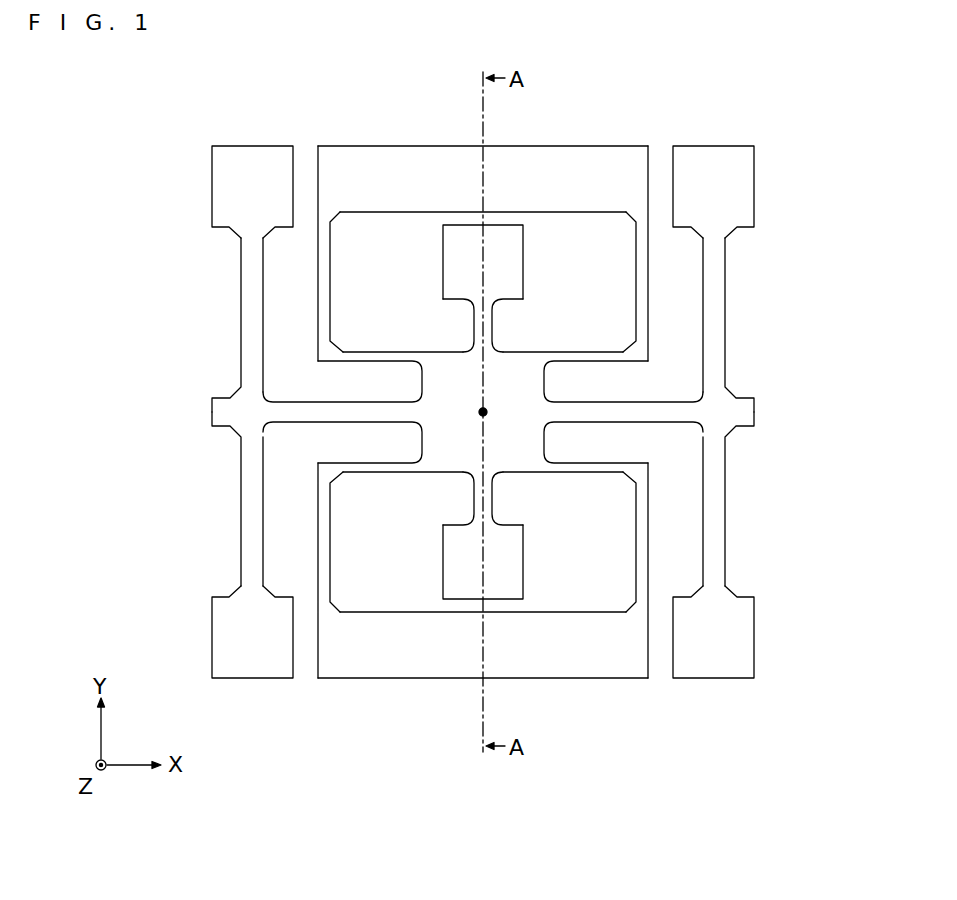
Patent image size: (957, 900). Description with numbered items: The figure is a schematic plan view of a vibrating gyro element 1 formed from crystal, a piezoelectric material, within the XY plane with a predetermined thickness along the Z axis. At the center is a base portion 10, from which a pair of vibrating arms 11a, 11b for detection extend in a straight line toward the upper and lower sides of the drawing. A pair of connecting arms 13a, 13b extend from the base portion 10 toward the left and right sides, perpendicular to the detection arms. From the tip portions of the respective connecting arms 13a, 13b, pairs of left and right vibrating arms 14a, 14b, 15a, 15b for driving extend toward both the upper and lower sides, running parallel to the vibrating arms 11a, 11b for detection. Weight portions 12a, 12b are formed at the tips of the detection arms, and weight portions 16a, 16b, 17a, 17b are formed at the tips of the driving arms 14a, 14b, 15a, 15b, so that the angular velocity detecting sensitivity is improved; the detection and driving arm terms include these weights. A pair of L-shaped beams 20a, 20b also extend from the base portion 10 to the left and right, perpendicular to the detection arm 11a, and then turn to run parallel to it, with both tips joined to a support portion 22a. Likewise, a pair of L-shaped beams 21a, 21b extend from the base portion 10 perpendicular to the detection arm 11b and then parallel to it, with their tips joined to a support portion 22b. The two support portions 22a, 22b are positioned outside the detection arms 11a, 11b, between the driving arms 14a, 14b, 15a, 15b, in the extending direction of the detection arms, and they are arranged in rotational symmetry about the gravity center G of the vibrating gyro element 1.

The vibrating gyro element 1 is at (772, 102).
The base portion 10 is at (548, 424).
The vibrating arm for detection 11a is at (498, 318).
The vibrating arm for detection 11b is at (498, 497).
The weight portion 12a is at (520, 262).
The weight portion 12b is at (520, 556).
The connecting arm 13a is at (340, 410).
The connecting arm 13b is at (618, 410).
The vibrating arm for driving 14a is at (241, 312).
The vibrating arm for driving 14b is at (241, 512).
The vibrating arm for driving 15a is at (725, 312).
The vibrating arm for driving 15b is at (725, 512).
The weight portion 16a is at (212, 182).
The weight portion 16b is at (212, 637).
The weight portion 17a is at (754, 182).
The weight portion 17b is at (754, 637).
The beam 20a is at (325, 293).
The beam 20b is at (641, 293).
The beam 21a is at (325, 530).
The beam 21b is at (643, 530).
The support portion 22a is at (576, 146).
The support portion 22b is at (576, 678).